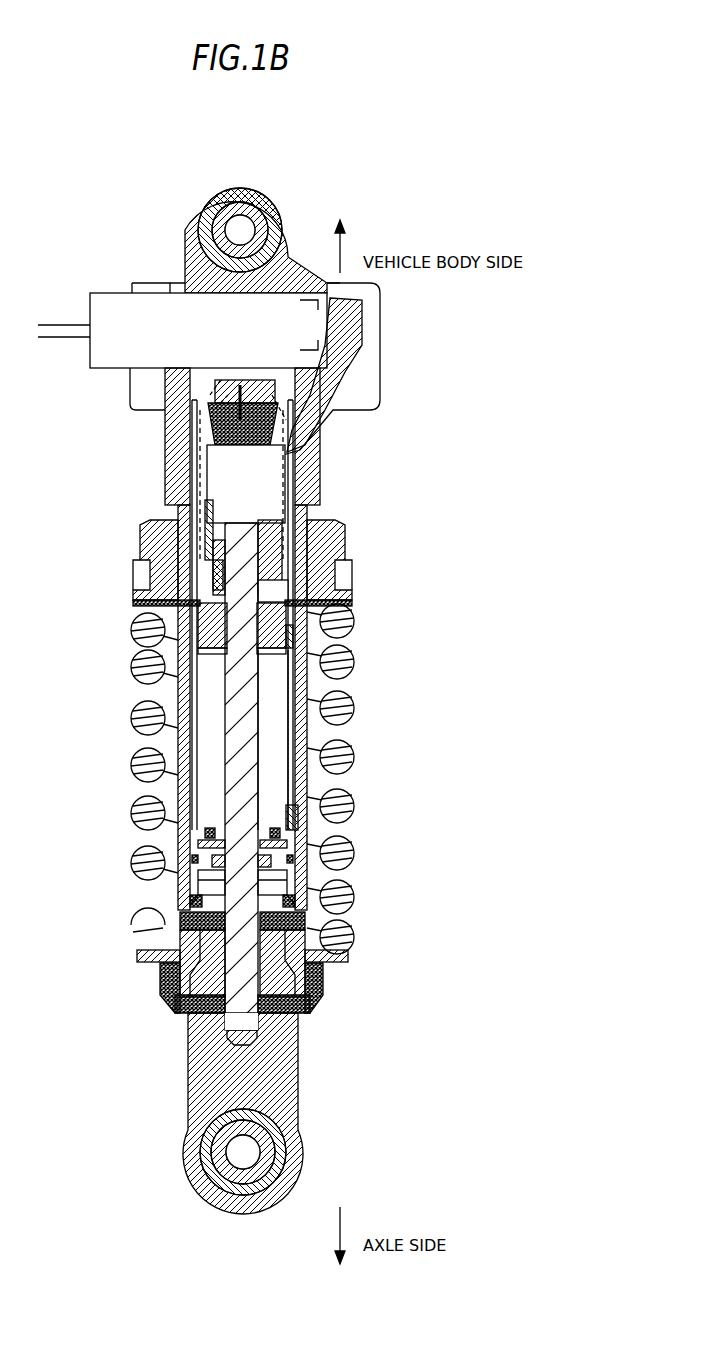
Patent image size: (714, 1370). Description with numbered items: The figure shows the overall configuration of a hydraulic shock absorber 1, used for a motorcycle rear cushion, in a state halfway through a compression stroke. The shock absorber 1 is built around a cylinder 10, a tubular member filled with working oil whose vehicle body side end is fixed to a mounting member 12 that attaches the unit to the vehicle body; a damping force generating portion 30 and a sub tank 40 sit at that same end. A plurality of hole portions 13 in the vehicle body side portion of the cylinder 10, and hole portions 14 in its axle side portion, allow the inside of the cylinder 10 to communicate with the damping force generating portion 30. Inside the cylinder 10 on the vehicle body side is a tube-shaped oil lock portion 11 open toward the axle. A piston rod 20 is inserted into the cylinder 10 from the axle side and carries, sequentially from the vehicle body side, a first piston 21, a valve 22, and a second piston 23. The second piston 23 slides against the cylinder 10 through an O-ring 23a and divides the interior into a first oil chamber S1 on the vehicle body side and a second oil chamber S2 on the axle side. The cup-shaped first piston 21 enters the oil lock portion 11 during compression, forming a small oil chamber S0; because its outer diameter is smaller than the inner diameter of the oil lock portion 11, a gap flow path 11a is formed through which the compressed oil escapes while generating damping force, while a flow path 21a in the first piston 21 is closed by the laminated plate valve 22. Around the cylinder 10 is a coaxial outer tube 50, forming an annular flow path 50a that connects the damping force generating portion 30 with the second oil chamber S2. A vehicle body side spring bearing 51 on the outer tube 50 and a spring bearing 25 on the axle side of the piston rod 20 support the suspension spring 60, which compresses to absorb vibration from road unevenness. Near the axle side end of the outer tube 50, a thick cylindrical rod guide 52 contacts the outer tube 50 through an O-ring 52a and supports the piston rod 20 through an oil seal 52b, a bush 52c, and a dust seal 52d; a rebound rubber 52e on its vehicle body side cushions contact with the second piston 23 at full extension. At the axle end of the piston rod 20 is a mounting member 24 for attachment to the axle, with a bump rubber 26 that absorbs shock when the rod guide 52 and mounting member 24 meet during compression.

The hydraulic shock absorber 1 is at (370, 208).
The mounting member 12 is at (194, 191).
The damping force generating portion 30 is at (113, 290).
The sub tank 40 is at (388, 348).
The hole portions 13 is at (273, 408).
The cylinder 10 is at (300, 683).
The small oil chamber S0 is at (253, 465).
The oil lock portion 11 is at (290, 477).
The gap flow path 11a is at (220, 510).
The vehicle body side spring bearing 51 is at (337, 533).
The first piston 21 is at (277, 540).
The flow path 21a is at (215, 573).
The first oil chamber S1 is at (283, 590).
The valve 22 is at (277, 610).
The second piston 23 is at (292, 635).
The O-ring 23a is at (200, 614).
The annular flow path 50a is at (291, 707).
The piston rod 20 is at (243, 713).
The second oil chamber S2 is at (273, 772).
The hole portions 14 is at (297, 810).
The rebound rubber 52e is at (213, 830).
The oil seal 52b is at (217, 847).
The bush 52c is at (215, 862).
The O-ring 52a is at (293, 860).
The rod guide 52 is at (200, 877).
The dust seal 52d is at (197, 903).
The bump rubber 26 is at (203, 942).
The outer tube 50 is at (317, 910).
The spring bearing 25 is at (343, 957).
The mounting member 24 is at (298, 1087).
The suspension spring 60 is at (343, 910).